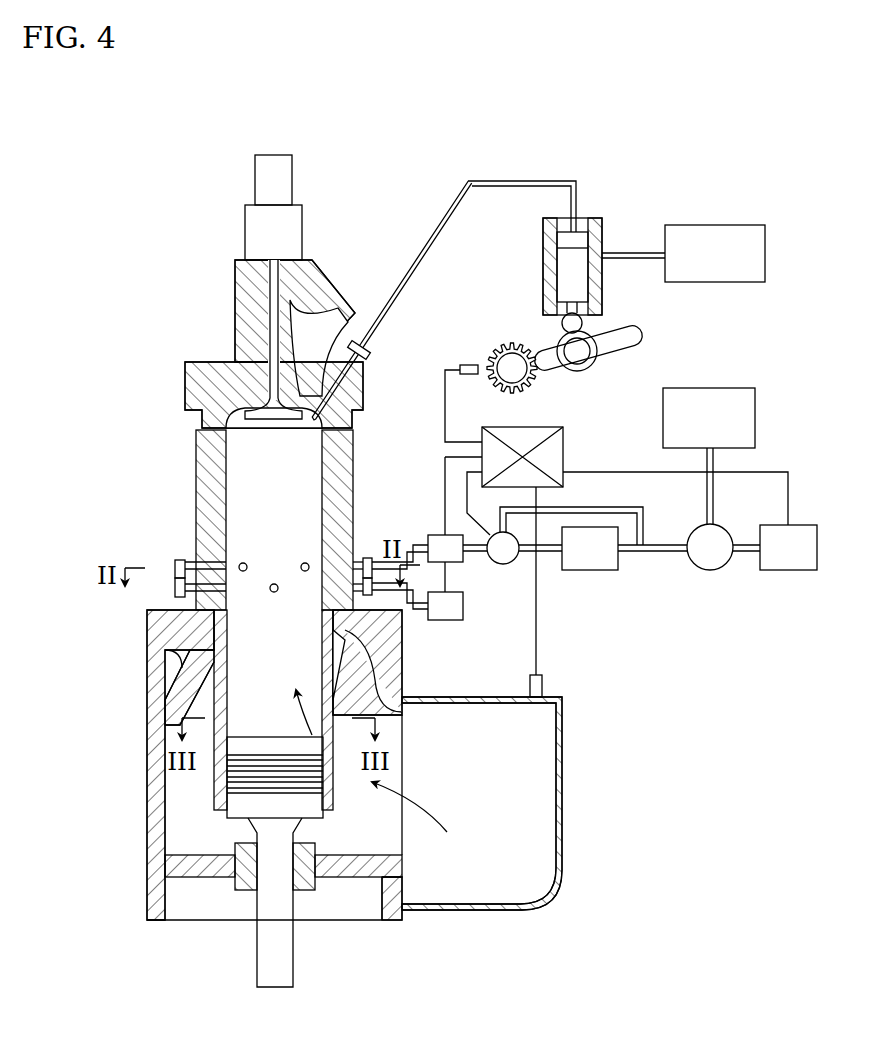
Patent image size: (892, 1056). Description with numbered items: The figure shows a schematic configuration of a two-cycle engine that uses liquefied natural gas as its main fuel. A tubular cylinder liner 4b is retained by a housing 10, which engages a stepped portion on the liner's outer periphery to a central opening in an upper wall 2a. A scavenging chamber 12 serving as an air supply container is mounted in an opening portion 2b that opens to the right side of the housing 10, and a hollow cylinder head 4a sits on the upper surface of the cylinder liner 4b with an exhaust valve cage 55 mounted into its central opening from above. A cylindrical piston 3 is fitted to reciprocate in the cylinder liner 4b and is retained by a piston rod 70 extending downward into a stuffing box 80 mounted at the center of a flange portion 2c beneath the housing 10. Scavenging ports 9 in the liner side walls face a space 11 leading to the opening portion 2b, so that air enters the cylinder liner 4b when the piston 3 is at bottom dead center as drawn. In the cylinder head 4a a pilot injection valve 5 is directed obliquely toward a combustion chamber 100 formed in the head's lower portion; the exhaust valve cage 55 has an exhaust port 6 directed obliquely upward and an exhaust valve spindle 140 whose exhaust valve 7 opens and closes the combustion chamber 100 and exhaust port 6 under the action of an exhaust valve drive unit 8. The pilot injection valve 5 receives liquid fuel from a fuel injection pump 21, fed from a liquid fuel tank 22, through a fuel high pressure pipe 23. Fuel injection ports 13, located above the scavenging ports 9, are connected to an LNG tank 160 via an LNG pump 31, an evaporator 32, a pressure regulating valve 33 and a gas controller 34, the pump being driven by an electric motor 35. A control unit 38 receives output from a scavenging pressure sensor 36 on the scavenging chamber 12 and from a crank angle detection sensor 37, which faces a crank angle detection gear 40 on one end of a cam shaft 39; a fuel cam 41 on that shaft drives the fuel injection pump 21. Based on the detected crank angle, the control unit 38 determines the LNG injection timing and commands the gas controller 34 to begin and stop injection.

The upper wall 2a is at (380, 618).
The opening portion 2b is at (405, 715).
The flange portion 2c is at (365, 872).
The piston 3 is at (245, 806).
The cylinder head 4a is at (185, 385).
The cylinder liner 4b is at (208, 494).
The pilot injection valve 5 is at (372, 352).
The exhaust port 6 is at (322, 330).
The exhaust valve 7 is at (302, 426).
The exhaust valve drive unit 8 is at (262, 226).
The scavenging port 9 is at (205, 715).
The housing 10 is at (165, 870).
The space 11 is at (368, 556).
The scavenging chamber 12 is at (562, 783).
The fuel injection port 13 is at (176, 590).
The fuel injection pump 21 is at (592, 218).
The liquid fuel tank 22 is at (716, 225).
The fuel high pressure pipe 23 is at (455, 203).
The LNG pump 31 is at (708, 570).
The evaporator 32 is at (592, 570).
The pressure regulating valve 33 is at (503, 564).
The gas controller 34 is at (440, 535).
The electric motor 35 is at (785, 570).
The scavenging pressure sensor 36 is at (542, 686).
The crank angle detection sensor 37 is at (469, 365).
The control unit 38 is at (563, 452).
The cam shaft 39 is at (625, 340).
The crank angle detection gear 40 is at (510, 343).
The fuel cam 41 is at (583, 368).
The exhaust valve cage 55 is at (230, 280).
The piston rod 70 is at (272, 968).
The stuffing box 80 is at (242, 892).
The combustion chamber 100 is at (232, 433).
The exhaust valve spindle 140 is at (268, 342).
The LNG tank 160 is at (750, 415).